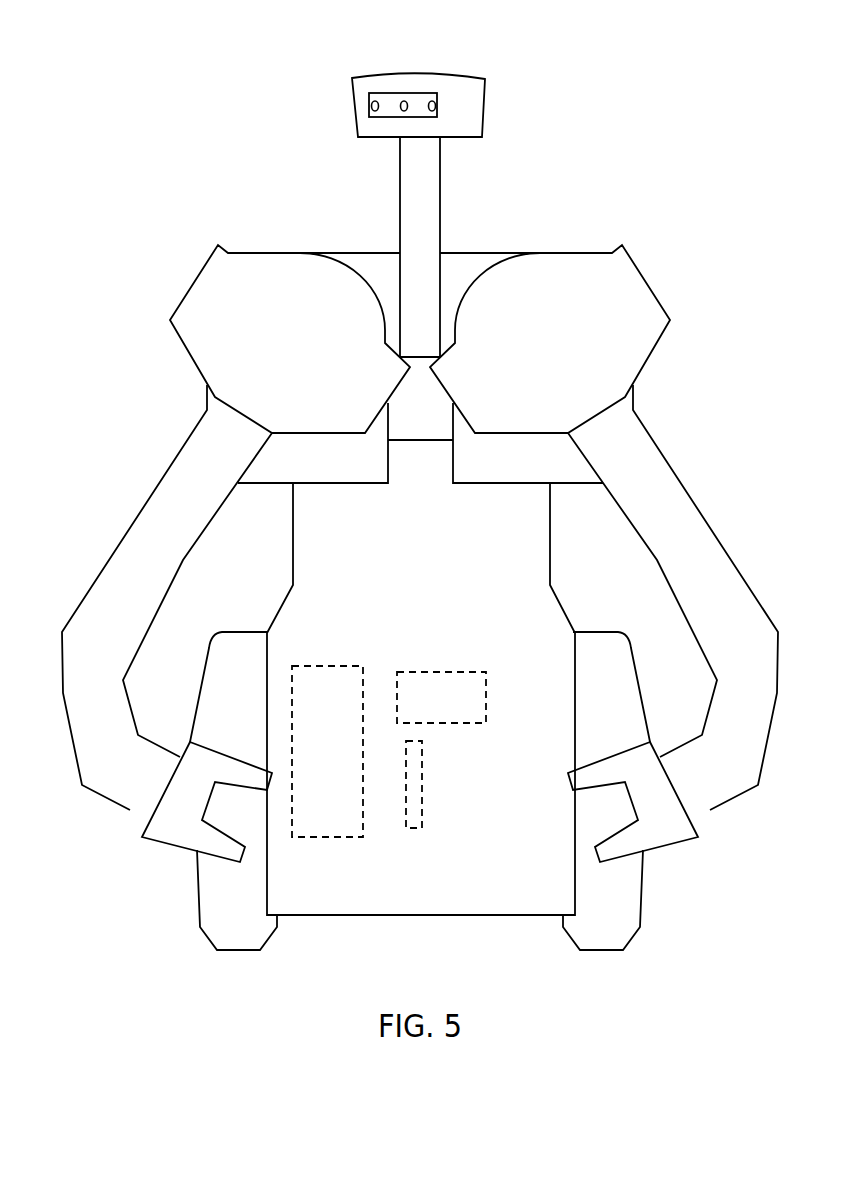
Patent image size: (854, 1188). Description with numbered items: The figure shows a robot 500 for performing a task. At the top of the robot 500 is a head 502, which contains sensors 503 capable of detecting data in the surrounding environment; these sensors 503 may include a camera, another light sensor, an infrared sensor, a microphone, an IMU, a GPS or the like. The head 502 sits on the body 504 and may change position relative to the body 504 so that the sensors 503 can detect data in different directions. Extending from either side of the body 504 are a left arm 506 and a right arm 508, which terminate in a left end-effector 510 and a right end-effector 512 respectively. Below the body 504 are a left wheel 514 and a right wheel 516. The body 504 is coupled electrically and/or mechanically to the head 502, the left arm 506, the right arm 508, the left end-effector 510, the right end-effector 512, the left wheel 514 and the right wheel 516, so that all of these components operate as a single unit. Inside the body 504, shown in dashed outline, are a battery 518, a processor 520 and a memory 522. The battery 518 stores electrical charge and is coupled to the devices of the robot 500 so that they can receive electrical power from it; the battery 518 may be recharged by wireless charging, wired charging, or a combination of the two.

The robot 500 is at (221, 149).
The head 502 is at (393, 71).
The sensors 503 is at (368, 107).
The body 504 is at (293, 605).
The left arm 506 is at (137, 538).
The right arm 508 is at (703, 538).
The left end-effector 510 is at (170, 831).
The right end-effector 512 is at (670, 831).
The left wheel 514 is at (250, 933).
The right wheel 516 is at (588, 938).
The battery 518 is at (327, 838).
The processor 520 is at (487, 698).
The memory 522 is at (422, 783).